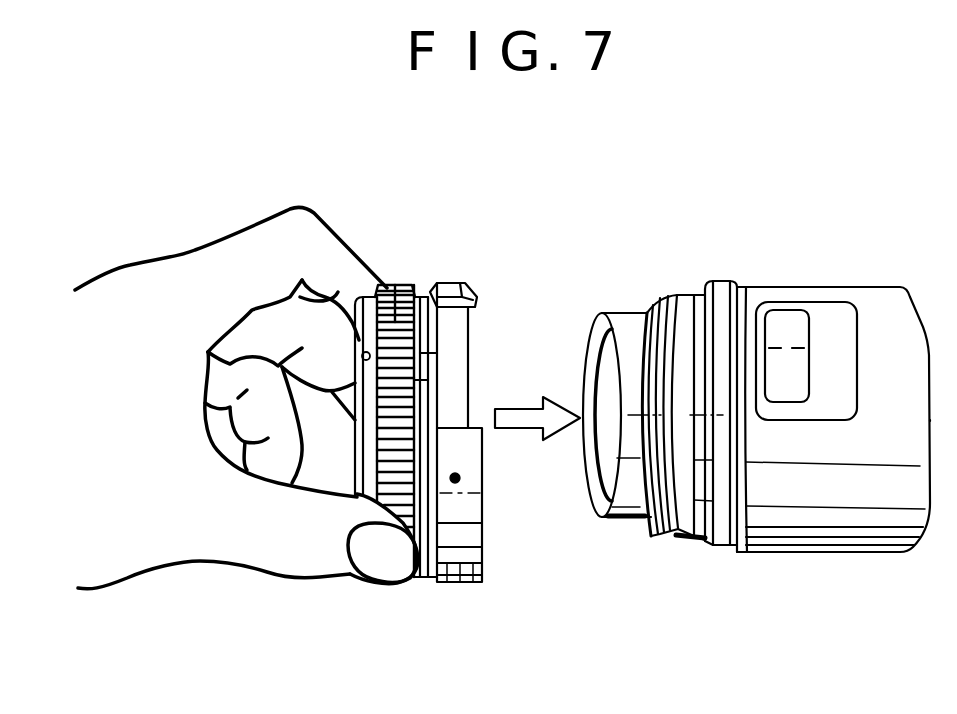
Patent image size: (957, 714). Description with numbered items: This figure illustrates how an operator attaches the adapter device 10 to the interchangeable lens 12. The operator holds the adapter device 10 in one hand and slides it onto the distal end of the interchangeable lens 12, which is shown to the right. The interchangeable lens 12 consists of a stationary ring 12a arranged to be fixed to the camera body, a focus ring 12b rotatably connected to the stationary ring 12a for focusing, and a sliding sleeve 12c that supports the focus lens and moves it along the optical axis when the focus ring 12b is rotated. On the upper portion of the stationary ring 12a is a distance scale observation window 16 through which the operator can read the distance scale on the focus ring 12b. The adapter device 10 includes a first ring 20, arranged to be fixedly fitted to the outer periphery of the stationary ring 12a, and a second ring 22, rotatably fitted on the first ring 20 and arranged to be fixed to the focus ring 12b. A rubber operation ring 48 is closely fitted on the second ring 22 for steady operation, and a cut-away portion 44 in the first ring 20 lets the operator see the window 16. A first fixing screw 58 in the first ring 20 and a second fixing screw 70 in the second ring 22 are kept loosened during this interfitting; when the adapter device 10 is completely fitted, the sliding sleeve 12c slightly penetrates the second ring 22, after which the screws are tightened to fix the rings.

The adapter device 10 is at (415, 284).
The interchangeable lens 12 is at (862, 487).
The stationary ring 12a is at (780, 522).
The focus ring 12b is at (695, 515).
The sliding sleeve 12c is at (625, 510).
The distance scale observation window 16 is at (771, 330).
The first ring 20 is at (462, 580).
The second ring 22 is at (370, 495).
The cut-away portion 44 is at (448, 302).
The operation ring 48 is at (393, 285).
The first fixing screw 58 is at (462, 479).
The second fixing screw 70 is at (364, 360).